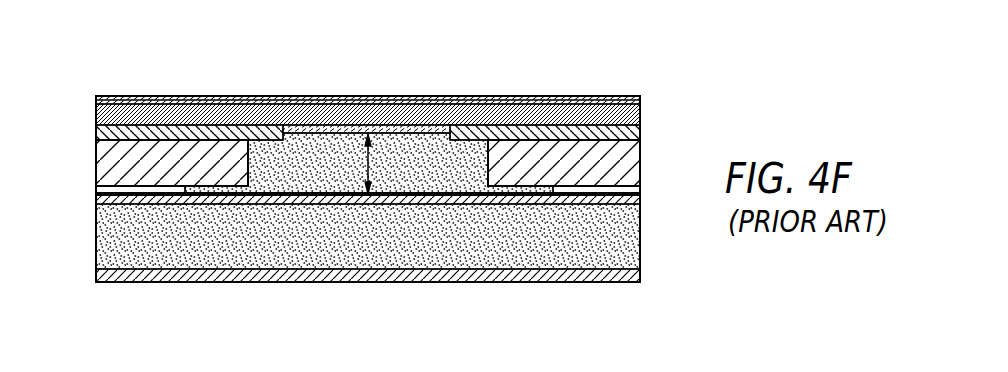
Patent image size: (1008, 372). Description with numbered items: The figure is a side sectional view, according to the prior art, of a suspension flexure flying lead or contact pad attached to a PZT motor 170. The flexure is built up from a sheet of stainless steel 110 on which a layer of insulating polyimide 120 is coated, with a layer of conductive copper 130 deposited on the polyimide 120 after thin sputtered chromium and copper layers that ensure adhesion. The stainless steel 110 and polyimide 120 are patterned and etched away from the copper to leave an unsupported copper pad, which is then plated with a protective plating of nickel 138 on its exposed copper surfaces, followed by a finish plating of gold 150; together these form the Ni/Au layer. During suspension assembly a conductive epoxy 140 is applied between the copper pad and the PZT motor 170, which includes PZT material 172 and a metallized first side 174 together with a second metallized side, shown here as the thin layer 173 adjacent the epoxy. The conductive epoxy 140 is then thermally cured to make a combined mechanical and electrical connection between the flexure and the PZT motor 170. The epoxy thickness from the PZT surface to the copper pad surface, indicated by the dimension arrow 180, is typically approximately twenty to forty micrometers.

The stainless steel 110 is at (641, 172).
The polyimide 120 is at (642, 138).
The copper layer 130 is at (642, 122).
The nickel 138 is at (642, 107).
The conductive epoxy 140 is at (312, 148).
The gold 150 is at (630, 96).
The PZT motor 170 is at (392, 243).
The PZT material 172 is at (107, 245).
The upper conductive layer 173 is at (96, 198).
The metallized first side 174 is at (135, 283).
The gap height 180 is at (372, 165).